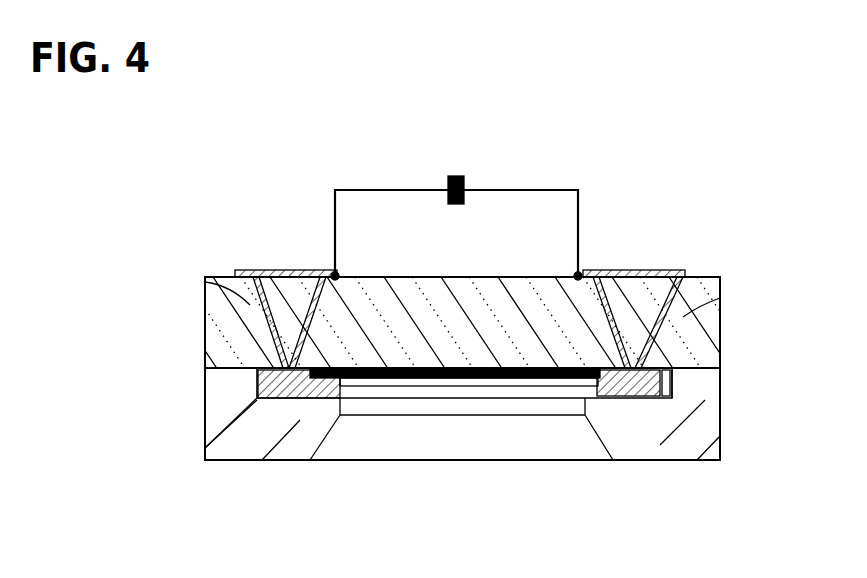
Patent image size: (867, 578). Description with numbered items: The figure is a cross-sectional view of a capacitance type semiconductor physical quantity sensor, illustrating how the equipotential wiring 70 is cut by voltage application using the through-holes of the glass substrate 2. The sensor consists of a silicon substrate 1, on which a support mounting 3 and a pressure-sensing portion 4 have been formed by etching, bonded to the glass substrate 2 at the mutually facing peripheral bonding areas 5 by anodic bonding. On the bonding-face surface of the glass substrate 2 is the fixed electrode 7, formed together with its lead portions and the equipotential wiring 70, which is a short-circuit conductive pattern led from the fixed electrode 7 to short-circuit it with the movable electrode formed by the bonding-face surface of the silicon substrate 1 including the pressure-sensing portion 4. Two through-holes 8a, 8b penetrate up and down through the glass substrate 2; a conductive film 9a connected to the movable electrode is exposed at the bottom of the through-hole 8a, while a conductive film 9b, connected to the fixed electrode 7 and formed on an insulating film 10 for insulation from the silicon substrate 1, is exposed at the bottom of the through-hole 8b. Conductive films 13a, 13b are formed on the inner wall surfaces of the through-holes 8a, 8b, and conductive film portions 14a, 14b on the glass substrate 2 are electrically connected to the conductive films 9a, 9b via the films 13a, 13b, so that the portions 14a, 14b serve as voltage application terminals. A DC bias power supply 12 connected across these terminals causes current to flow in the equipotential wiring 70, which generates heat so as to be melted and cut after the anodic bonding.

The silicon substrate 1 is at (196, 430).
The glass substrate 2 is at (196, 320).
The support mounting 3 is at (300, 417).
The pressure-sensing portion 4 is at (385, 417).
The bonding areas 5 is at (688, 390).
The fixed electrode 7 is at (437, 368).
The equipotential wiring 70 is at (578, 367).
The through-hole 8a is at (637, 297).
The through-hole 8b is at (288, 300).
The conductive film 9a is at (625, 400).
The conductive film 9b is at (257, 372).
The insulating film 10 is at (262, 400).
The DC bias power supply 12 is at (456, 175).
The conductive film 13a is at (720, 298).
The conductive film 13b is at (205, 282).
The conductive film portion 14a is at (612, 272).
The conductive film portion 14b is at (300, 270).